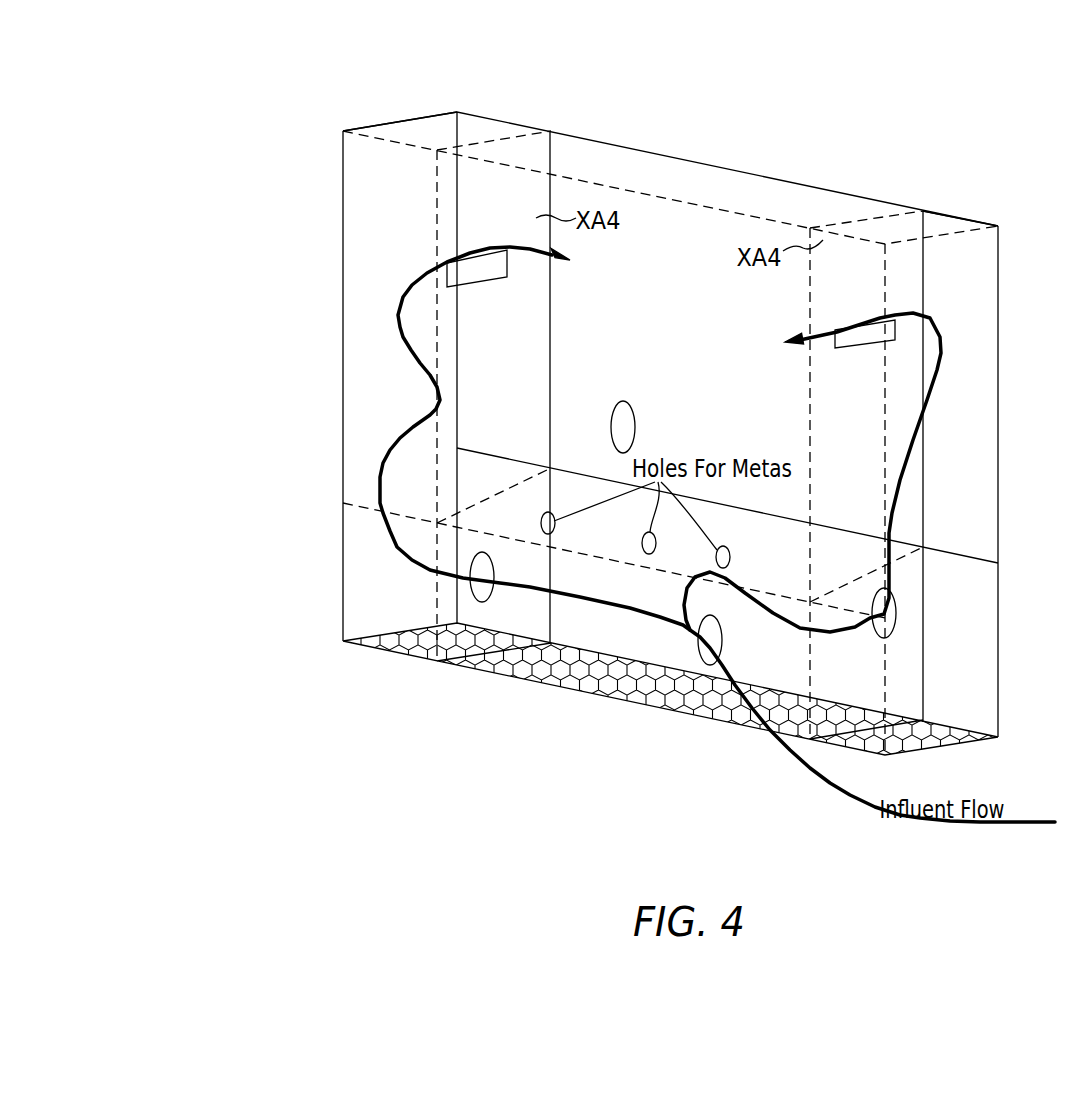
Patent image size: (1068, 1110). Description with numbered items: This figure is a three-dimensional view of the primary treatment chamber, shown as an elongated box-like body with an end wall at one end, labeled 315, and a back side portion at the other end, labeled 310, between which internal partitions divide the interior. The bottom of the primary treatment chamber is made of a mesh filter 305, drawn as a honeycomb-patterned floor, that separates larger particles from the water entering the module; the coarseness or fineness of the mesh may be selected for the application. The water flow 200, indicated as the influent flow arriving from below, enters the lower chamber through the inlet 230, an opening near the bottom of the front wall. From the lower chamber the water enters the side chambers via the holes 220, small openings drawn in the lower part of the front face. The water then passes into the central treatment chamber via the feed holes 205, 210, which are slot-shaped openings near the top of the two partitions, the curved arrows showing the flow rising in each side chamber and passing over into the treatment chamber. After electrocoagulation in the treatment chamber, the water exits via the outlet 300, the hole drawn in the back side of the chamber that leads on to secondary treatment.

The water flow 200 is at (698, 448).
The feed hole 205 is at (862, 381).
The feed hole 210 is at (484, 314).
The holes 220 is at (484, 561).
The inlet 230 is at (741, 648).
The outlet 300 is at (618, 427).
The mesh filter 305 is at (420, 647).
The end wall 310 is at (906, 222).
The end wall 315 is at (413, 128).